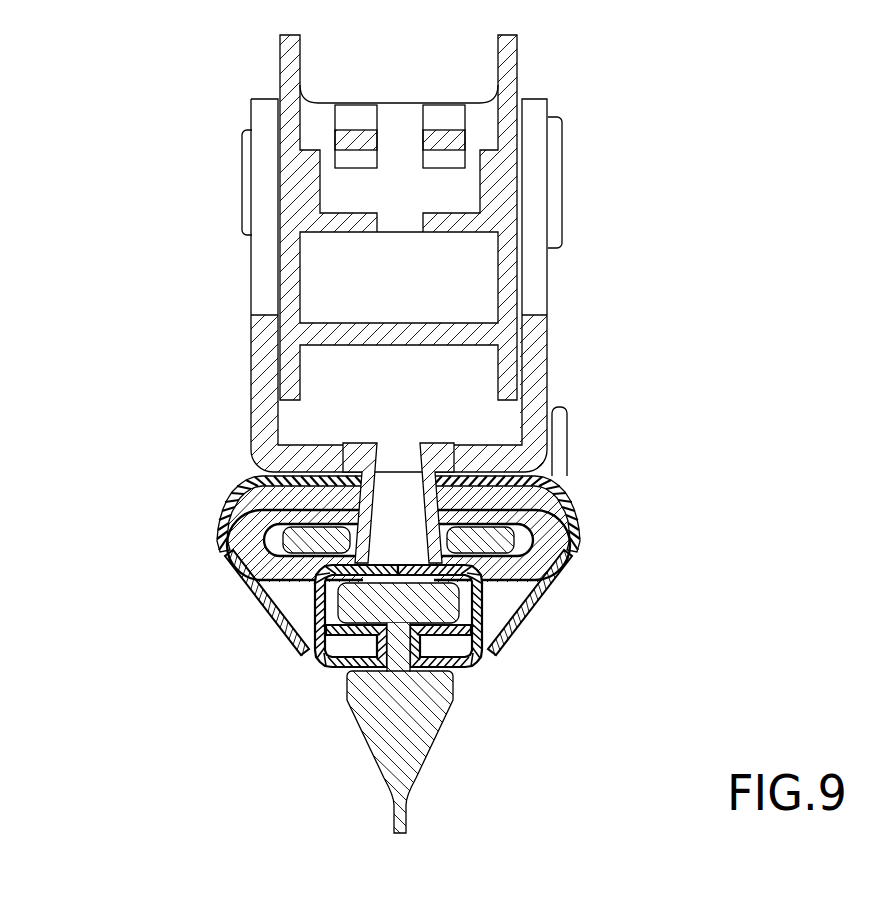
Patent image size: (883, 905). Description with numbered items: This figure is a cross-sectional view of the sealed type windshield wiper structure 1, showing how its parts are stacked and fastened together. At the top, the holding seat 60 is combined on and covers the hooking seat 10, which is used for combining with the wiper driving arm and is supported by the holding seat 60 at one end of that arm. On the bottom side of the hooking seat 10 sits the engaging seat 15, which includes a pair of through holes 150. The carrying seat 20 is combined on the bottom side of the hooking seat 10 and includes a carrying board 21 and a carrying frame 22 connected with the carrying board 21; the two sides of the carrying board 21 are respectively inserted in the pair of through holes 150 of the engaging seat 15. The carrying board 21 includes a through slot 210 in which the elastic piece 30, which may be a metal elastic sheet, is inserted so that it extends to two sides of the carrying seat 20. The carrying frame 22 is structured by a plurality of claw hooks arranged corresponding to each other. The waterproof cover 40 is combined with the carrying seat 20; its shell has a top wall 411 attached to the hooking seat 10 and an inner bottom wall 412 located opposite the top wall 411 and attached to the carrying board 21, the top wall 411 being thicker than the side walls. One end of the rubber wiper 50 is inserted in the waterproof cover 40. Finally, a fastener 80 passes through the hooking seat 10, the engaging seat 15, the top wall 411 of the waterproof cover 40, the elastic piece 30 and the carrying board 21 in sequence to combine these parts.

The sealed type windshield wiper structure 1 is at (45, 60).
The hooking seat 10 is at (537, 353).
The engaging seat 15 is at (258, 496).
The carrying seat 20 is at (436, 646).
The carrying board 21 is at (483, 575).
The carrying frame 22 is at (481, 607).
The elastic piece 30 is at (313, 535).
The waterproof cover 40 is at (458, 494).
The rubber wiper 50 is at (420, 730).
The holding seat 60 is at (493, 197).
The fastener 80 is at (544, 434).
The through holes 150 is at (226, 551).
The through slot 210 is at (533, 538).
The top wall 411 is at (313, 483).
The inner bottom wall 412 is at (397, 577).